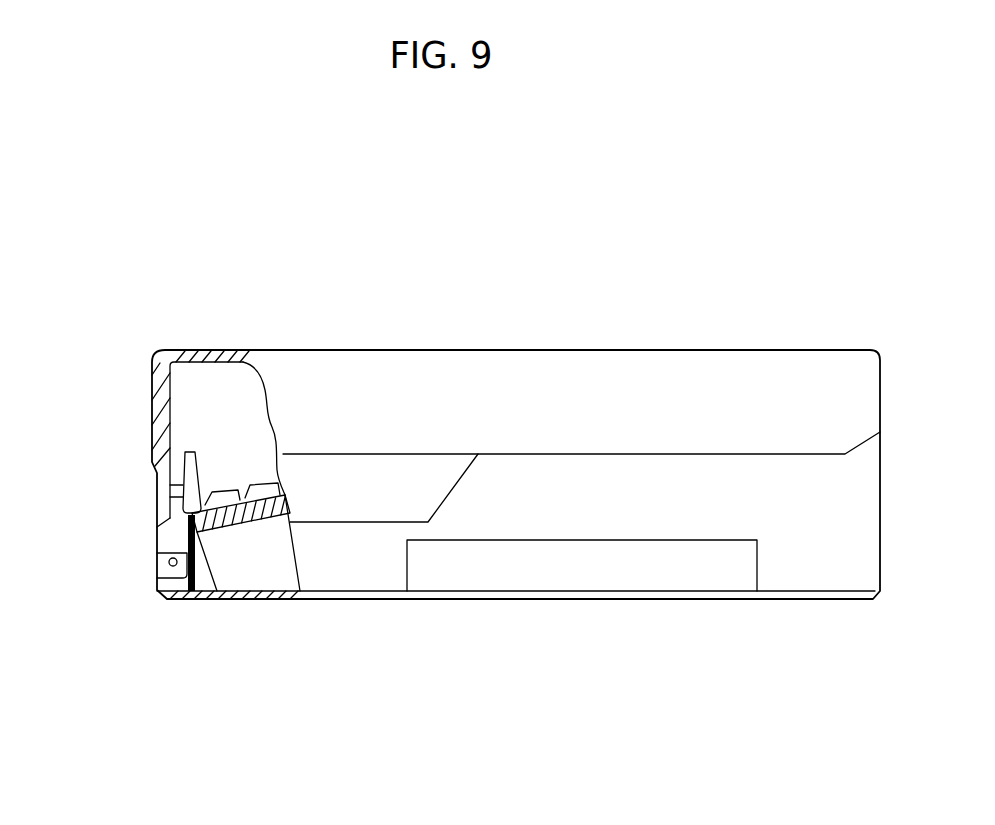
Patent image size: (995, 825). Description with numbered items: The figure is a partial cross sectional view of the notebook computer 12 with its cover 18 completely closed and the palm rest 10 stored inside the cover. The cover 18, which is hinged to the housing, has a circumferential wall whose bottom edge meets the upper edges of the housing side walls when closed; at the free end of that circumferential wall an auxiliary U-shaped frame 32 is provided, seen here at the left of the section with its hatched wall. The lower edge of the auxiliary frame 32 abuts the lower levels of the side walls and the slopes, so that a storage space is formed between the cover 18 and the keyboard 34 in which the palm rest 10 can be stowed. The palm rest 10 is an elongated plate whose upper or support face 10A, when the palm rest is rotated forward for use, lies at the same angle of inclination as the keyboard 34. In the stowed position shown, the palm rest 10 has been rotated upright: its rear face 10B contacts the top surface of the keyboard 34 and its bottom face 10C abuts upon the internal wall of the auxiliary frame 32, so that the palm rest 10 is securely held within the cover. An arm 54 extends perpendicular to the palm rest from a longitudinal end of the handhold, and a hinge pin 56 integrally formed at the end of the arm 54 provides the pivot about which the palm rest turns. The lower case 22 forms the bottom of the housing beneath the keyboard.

The notebook computer 12 is at (707, 265).
The cover 18 is at (500, 350).
The lower case 22 is at (263, 593).
The auxiliary U-shaped frame 32 is at (157, 480).
The palm rest 10 is at (190, 443).
The support face 10A is at (198, 473).
The rear face 10B is at (192, 515).
The bottom face 10C is at (167, 490).
The keyboard 34 is at (270, 488).
The arm 54 is at (167, 538).
The hinge pin 56 is at (170, 567).